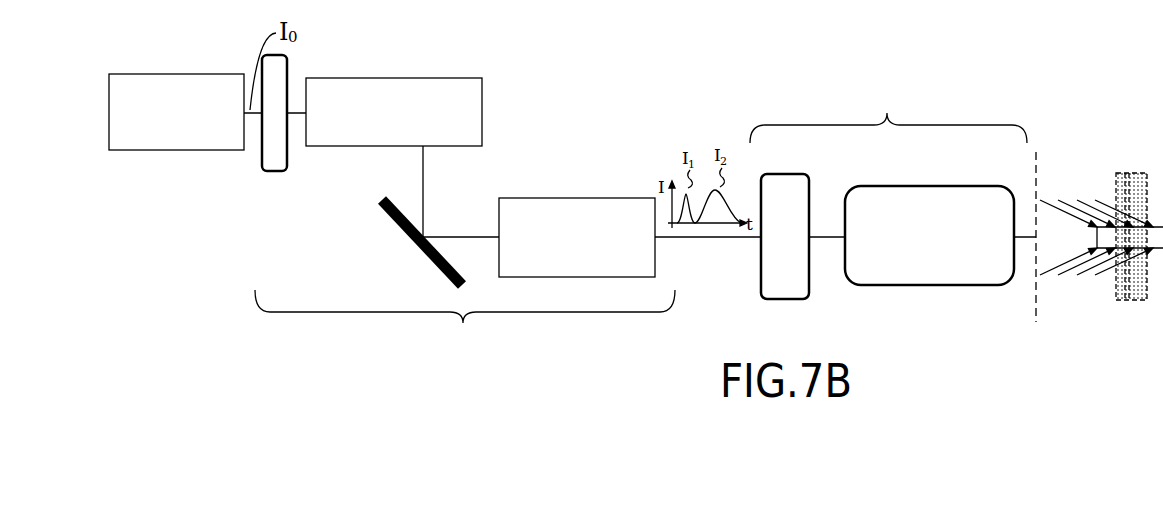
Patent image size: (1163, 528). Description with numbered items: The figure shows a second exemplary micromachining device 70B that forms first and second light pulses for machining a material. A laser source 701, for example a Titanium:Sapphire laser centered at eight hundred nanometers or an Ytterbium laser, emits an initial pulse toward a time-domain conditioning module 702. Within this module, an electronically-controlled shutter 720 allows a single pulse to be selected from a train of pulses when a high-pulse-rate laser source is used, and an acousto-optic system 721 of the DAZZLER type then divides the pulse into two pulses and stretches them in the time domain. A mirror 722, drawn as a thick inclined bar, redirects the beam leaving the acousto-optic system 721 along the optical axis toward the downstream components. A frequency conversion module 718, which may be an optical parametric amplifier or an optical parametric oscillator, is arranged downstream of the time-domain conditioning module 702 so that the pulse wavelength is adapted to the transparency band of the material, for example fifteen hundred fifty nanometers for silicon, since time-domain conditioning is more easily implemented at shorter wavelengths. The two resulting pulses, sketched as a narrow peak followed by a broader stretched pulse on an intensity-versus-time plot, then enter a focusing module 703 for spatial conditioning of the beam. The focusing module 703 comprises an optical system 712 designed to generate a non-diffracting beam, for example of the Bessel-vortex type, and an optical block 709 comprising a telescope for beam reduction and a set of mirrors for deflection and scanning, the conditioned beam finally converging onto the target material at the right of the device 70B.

The laser source 701 is at (142, 74).
The electronically-controlled shutter 720 is at (262, 160).
The acousto-optic system 721 is at (395, 78).
The mirror / beam splitter 722 is at (395, 222).
The frequency conversion module 718 is at (542, 198).
The time-domain conditioning module 702 is at (463, 323).
The optical system 712 is at (778, 174).
The optical block 709 is at (900, 186).
The focusing module 703 is at (887, 113).
The micromachining device 70B is at (1058, 100).